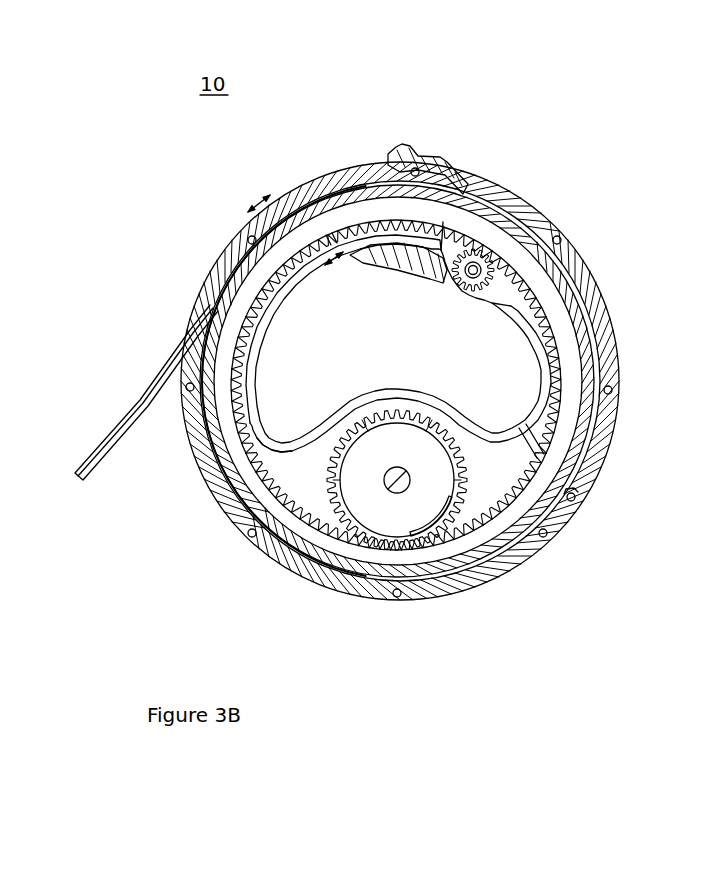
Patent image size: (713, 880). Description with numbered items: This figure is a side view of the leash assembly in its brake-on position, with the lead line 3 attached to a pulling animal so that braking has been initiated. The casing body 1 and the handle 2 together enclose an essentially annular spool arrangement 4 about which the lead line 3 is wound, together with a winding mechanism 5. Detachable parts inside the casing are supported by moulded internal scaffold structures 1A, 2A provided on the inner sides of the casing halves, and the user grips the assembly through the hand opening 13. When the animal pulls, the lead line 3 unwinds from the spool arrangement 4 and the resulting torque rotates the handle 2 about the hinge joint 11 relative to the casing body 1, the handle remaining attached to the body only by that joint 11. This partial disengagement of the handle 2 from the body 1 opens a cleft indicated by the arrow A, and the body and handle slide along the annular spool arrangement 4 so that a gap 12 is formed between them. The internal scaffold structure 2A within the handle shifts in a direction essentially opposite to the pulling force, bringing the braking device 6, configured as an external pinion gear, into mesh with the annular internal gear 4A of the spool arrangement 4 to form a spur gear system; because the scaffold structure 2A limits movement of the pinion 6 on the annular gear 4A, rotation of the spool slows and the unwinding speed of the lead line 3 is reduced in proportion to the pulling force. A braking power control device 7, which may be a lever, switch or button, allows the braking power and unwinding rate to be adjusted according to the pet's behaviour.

The casing body 1 is at (275, 562).
The internal scaffold structure 1A is at (272, 448).
The handle 2 is at (473, 183).
The internal scaffold structure 2A is at (540, 411).
The lead line 3 is at (135, 407).
The spool arrangement 4 is at (573, 350).
The annular internal gear 4A is at (550, 323).
The winding mechanism 5 is at (432, 483).
The braking device 6 is at (476, 265).
The braking power control device 7 is at (420, 262).
The hinge joint 11 is at (572, 496).
The gap 12 is at (323, 240).
The hand opening 13 is at (298, 333).
The cleft A is at (520, 420).